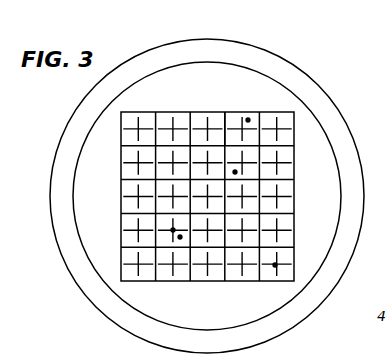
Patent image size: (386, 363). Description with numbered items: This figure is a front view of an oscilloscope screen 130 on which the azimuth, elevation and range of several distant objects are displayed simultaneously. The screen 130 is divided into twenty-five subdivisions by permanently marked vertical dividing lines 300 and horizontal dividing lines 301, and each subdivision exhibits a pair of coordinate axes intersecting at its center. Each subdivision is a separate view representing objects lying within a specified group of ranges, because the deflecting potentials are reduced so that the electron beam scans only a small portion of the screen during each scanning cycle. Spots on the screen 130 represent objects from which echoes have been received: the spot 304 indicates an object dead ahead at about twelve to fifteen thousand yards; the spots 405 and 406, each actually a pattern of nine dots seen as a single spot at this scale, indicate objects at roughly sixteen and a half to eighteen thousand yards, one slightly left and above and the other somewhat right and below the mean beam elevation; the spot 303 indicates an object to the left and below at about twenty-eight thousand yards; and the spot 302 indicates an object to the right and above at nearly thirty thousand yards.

The screen 130 is at (102, 268).
The vertical dividing lines 300 is at (175, 99).
The horizontal dividing lines 301 is at (222, 112).
The spot identifying object 302 is at (267, 98).
The spot identifying object 303 is at (235, 172).
The spot identifying object 304 is at (275, 265).
The pattern of nine dots 405 is at (173, 230).
The pattern of nine dots 406 is at (180, 237).